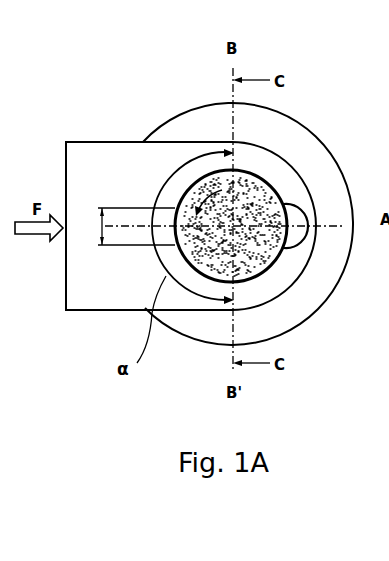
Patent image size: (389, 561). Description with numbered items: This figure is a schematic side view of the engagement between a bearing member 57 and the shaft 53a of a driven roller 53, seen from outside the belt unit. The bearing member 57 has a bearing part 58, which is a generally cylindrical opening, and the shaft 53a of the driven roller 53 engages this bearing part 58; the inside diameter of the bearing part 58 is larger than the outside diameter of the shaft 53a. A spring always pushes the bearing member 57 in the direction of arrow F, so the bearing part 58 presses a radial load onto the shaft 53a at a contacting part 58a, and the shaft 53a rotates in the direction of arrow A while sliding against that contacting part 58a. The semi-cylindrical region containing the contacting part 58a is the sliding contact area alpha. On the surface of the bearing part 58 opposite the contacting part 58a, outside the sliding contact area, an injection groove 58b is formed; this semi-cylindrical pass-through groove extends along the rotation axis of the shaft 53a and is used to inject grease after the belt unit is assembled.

The driven roller 53 is at (337, 168).
The shaft 53a is at (273, 178).
The bearing member 57 is at (78, 311).
The bearing part 58 is at (280, 272).
The contacting part 58a is at (121, 226).
The injection groove 58b is at (307, 263).